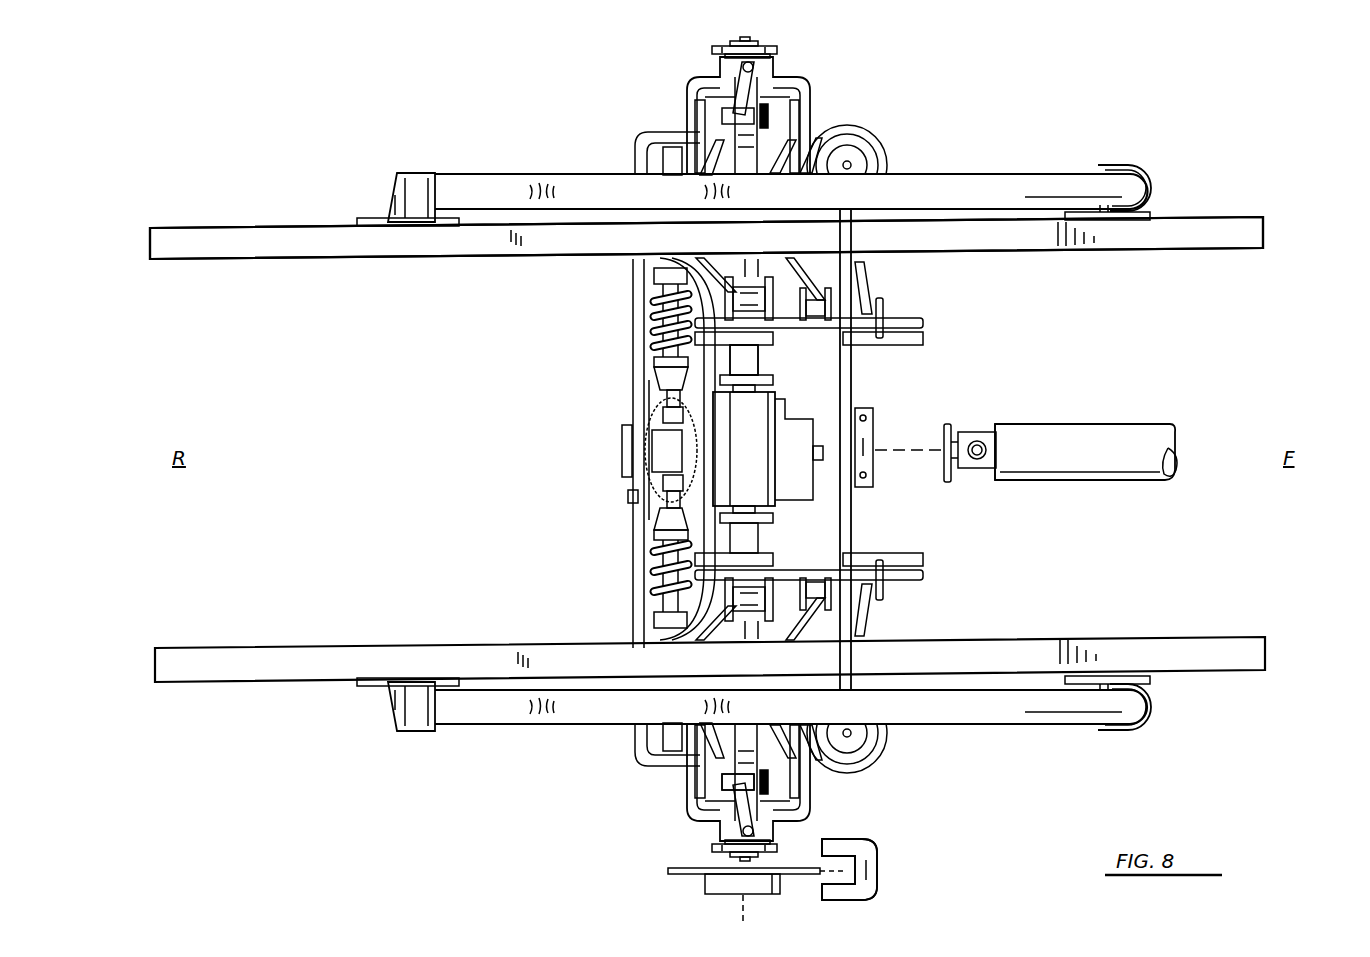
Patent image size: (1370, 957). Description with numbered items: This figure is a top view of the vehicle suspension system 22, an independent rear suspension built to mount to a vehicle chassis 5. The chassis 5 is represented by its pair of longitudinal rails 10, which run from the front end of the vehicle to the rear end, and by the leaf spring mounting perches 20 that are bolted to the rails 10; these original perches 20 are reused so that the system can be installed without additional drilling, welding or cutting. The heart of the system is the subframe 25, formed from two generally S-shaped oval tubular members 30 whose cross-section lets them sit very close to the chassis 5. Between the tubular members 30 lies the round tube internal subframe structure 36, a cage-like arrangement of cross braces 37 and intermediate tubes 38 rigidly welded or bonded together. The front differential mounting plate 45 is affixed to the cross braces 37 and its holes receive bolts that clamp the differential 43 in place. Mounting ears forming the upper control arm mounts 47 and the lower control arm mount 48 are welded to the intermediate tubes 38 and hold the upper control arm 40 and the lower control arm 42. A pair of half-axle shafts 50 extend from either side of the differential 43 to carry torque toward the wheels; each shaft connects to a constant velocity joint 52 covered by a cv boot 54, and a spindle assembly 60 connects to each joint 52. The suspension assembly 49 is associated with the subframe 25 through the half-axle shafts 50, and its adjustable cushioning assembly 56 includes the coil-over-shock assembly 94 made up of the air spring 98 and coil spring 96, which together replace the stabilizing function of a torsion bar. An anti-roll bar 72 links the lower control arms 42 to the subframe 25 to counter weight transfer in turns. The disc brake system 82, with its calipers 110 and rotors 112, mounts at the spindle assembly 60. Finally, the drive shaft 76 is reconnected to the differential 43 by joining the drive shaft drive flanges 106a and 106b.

The vehicle chassis 5 is at (1268, 224).
The rails 10 is at (274, 260).
The leaf spring mounting perches 20 is at (420, 175).
The vehicle suspension system 22 is at (868, 546).
The subframe 25 is at (598, 480).
The tubular members 30 is at (1000, 172).
The internal subframe structure 36 is at (866, 374).
The cross braces 37 is at (683, 438).
The intermediate tubes 38 is at (890, 334).
The upper control arm 40 is at (738, 130).
The lower control arm 42 is at (870, 292).
The differential 43 is at (752, 475).
The front differential mounting plate 45 is at (872, 410).
The upper control arm mounts 47 is at (656, 285).
The lower control arm mount 48 is at (884, 318).
The suspension assembly 49 is at (697, 62).
The half-axle shafts 50 is at (760, 125).
The constant velocity joint 52 is at (770, 128).
The cv boot 54 is at (722, 776).
The adjustable cushioning assembly 56 is at (645, 398).
The spindle assembly 60 is at (778, 55).
The anti-roll bar 72 is at (636, 328).
The drive shaft 76 is at (1142, 438).
The disc brake system 82 is at (882, 852).
The coil-over-shock assembly 94 is at (650, 374).
The coil spring 96 is at (658, 313).
The air spring 98 is at (862, 158).
The drive shaft drive flange 106a is at (790, 420).
The drive shaft drive flange 106b is at (950, 428).
The calipers 110 is at (878, 882).
The rotors 112 is at (668, 872).